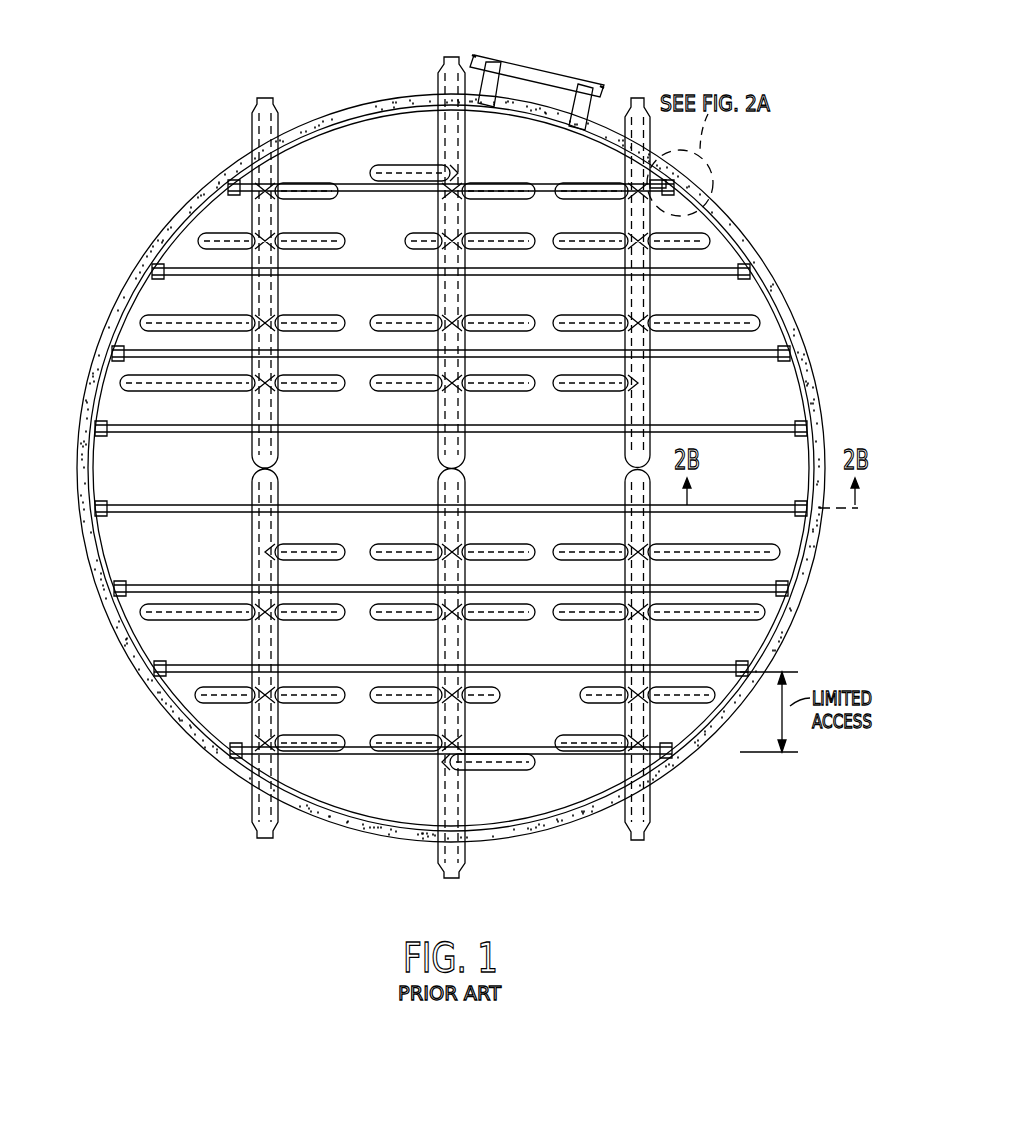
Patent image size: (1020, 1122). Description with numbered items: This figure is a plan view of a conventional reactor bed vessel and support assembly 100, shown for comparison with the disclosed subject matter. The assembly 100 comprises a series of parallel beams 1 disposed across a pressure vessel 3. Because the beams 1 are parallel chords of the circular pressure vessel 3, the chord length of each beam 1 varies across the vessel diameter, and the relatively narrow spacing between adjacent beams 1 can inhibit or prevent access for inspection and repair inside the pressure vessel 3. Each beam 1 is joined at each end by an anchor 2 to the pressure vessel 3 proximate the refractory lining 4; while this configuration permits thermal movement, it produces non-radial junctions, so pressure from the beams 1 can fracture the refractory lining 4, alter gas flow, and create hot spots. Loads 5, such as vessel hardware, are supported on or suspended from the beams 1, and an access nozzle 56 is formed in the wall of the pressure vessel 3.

The reactor bed vessel and support assembly 100 is at (451, 433).
The access nozzle 56 is at (566, 62).
The load 5 is at (418, 170).
The pressure vessel 3 is at (205, 212).
The refractory lining 4 is at (128, 292).
The anchor 2 is at (741, 263).
The beam 1 is at (548, 754).